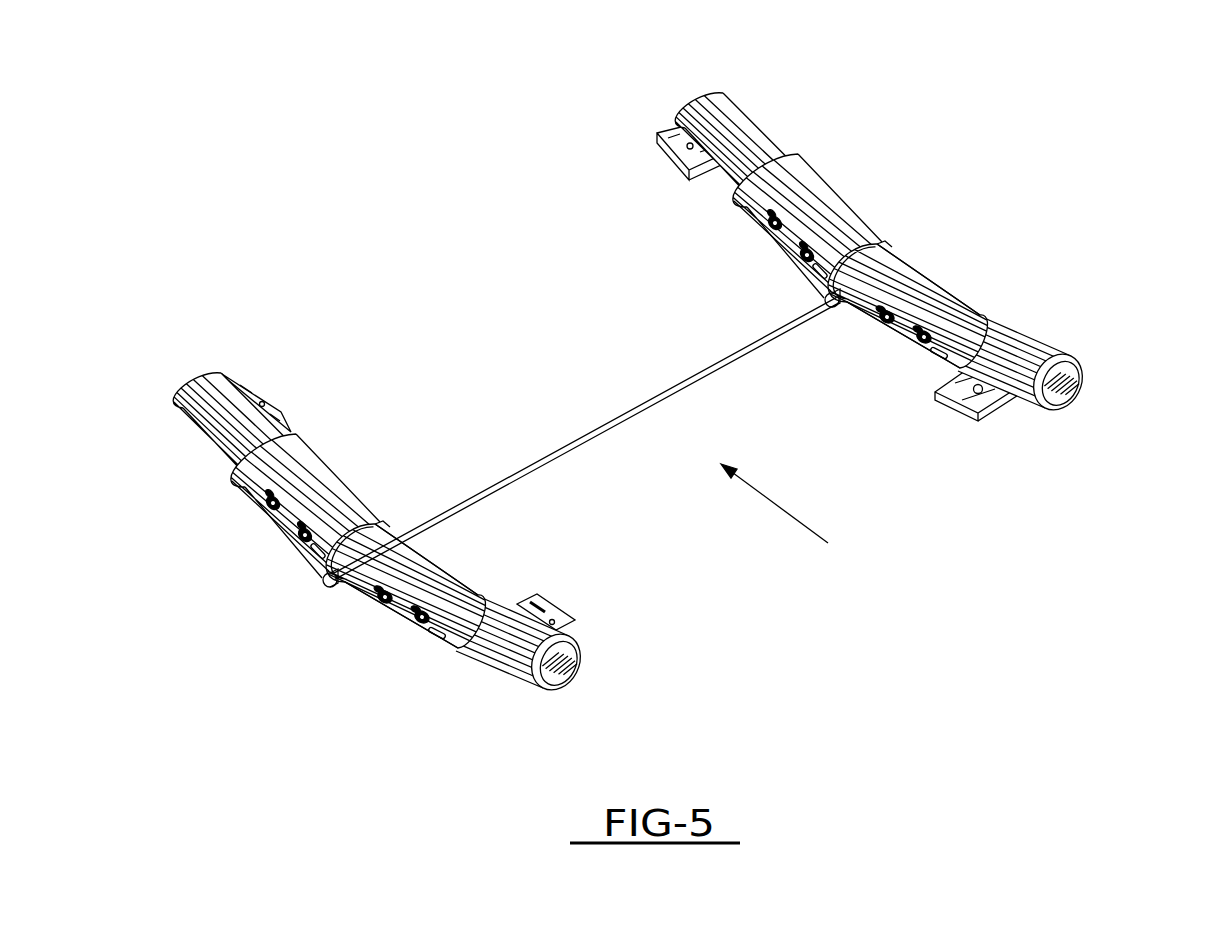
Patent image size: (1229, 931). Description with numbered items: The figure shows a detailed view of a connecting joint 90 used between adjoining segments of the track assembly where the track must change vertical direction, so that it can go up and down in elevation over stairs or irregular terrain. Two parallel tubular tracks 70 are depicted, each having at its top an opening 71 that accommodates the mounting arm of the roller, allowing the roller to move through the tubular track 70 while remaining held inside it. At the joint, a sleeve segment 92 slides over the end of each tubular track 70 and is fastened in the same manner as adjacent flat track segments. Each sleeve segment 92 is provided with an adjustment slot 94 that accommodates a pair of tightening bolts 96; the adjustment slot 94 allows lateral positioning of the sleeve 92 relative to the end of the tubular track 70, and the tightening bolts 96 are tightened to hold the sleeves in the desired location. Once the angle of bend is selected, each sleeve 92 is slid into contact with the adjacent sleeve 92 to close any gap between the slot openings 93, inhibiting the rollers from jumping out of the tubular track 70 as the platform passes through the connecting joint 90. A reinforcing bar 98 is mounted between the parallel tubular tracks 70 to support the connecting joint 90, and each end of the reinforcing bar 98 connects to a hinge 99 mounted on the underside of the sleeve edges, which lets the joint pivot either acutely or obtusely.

The tubular track 70 is at (228, 372).
The opening 71 is at (710, 92).
The connecting joint 90 is at (774, 503).
The sleeve segment 92 is at (247, 487).
The slot opening 93 is at (333, 487).
The adjustment slot 94 is at (313, 555).
The tightening bolts 96 is at (264, 508).
The reinforcing bar 98 is at (660, 400).
The hinge 99 is at (332, 595).